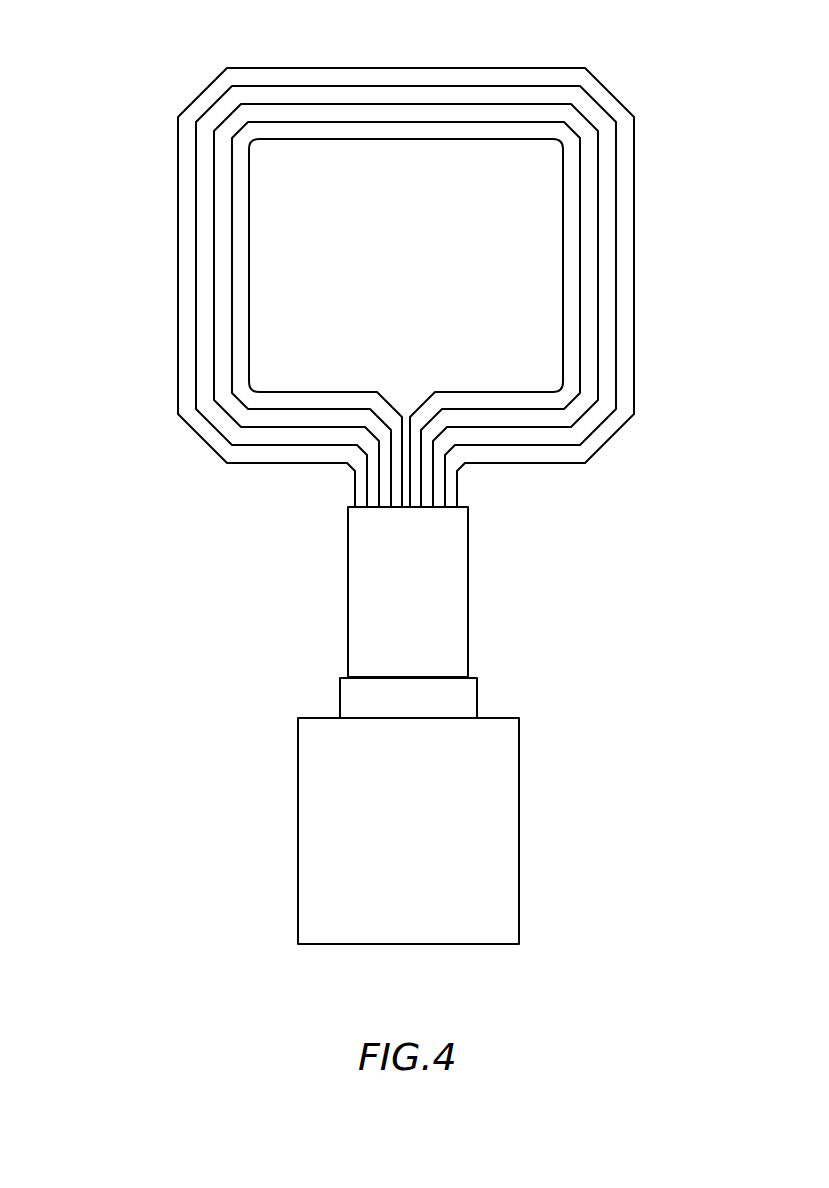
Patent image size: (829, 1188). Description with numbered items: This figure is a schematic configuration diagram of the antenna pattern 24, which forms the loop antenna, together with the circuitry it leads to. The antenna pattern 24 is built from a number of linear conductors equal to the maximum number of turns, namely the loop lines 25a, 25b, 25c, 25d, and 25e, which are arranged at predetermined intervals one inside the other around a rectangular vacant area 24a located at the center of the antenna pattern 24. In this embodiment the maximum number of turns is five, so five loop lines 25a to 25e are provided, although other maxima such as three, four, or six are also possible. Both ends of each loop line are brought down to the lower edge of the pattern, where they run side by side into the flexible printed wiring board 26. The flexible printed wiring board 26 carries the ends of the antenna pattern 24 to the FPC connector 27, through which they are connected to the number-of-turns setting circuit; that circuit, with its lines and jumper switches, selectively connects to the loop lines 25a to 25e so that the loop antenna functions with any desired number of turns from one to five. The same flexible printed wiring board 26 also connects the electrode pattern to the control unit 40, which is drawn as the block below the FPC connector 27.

The antenna pattern 24 is at (378, 253).
The vacant area 24a is at (413, 210).
The loop line 25a is at (563, 160).
The loop line 25b is at (581, 187).
The loop line 25c is at (599, 215).
The loop line 25d is at (617, 245).
The loop line 25e is at (634, 277).
The flexible printed wiring board 26 is at (458, 592).
The FPC connector 27 is at (468, 698).
The control unit 40 is at (507, 813).